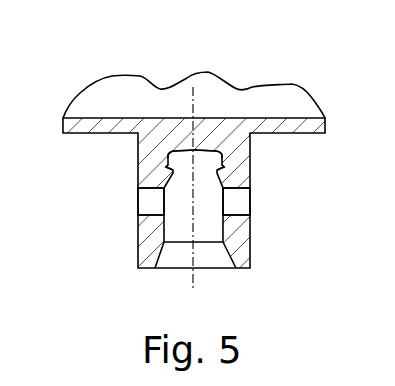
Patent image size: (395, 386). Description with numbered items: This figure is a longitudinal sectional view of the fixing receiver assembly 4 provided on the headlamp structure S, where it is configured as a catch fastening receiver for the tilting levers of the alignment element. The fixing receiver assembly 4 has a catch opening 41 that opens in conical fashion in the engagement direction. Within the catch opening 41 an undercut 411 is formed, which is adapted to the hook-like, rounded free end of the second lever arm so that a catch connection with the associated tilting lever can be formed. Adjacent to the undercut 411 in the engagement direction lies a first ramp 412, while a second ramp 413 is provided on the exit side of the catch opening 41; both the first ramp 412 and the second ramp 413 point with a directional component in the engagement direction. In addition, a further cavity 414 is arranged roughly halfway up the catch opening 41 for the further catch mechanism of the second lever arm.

The headlamp structure S is at (240, 86).
The fixing receiver assembly 4 is at (330, 115).
The catch opening 41 is at (187, 212).
The undercut 411 is at (168, 159).
The first ramp 412 is at (219, 180).
The second ramp 413 is at (156, 261).
The further cavity 414 is at (150, 199).